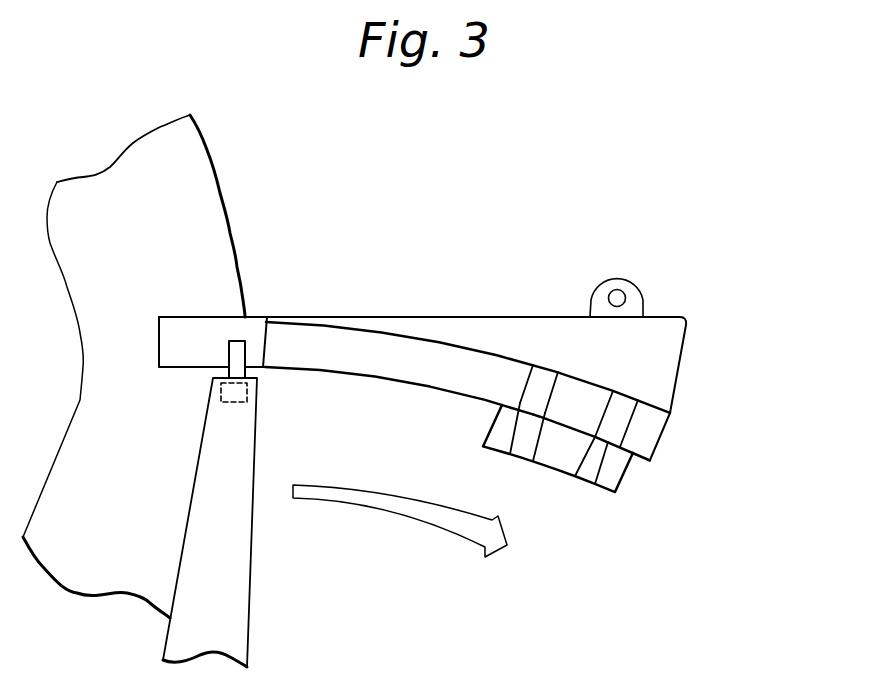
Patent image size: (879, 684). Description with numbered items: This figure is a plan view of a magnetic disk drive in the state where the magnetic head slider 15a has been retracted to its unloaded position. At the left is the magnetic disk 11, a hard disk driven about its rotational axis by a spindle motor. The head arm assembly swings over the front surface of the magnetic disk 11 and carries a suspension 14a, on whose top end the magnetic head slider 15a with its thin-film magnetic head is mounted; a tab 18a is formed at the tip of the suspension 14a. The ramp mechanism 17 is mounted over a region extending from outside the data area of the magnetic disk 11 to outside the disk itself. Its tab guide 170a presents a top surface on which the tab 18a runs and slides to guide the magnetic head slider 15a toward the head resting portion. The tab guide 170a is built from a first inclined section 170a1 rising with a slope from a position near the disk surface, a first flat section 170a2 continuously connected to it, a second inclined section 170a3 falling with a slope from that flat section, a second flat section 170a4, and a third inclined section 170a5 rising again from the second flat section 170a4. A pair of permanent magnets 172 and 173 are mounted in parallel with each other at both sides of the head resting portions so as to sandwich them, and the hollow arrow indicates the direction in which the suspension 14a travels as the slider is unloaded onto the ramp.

The magnetic disk 11 is at (200, 195).
The suspension 14a is at (233, 565).
The magnetic head slider 15a is at (250, 398).
The ramp mechanism 17 is at (737, 331).
The tab 18a is at (237, 355).
The tab guide 170a is at (711, 242).
The first inclined section 170a1 is at (251, 330).
The first flat section 170a2 is at (372, 345).
The second inclined section 170a3 is at (543, 377).
The second flat section 170a4 is at (582, 387).
The third inclined section 170a5 is at (622, 402).
The permanent magnet 172 is at (525, 445).
The permanent magnet 173 is at (587, 465).